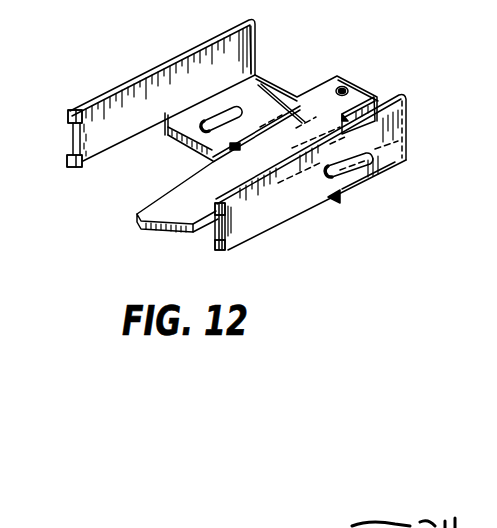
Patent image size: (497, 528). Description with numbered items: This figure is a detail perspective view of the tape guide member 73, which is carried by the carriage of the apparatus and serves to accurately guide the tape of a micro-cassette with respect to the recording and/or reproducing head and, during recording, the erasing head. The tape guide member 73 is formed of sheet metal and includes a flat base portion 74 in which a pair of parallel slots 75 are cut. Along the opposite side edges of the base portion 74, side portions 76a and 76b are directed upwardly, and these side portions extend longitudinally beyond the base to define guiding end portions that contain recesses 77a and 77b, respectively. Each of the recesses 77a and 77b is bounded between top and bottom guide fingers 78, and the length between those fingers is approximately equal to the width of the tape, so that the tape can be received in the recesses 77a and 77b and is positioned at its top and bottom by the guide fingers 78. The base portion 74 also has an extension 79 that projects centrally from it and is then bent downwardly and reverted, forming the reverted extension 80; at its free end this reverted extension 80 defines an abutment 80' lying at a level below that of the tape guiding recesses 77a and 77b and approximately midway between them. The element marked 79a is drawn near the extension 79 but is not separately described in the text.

The tape guide member 73 is at (290, 45).
The base portion 74 is at (273, 96).
The parallel slots 75 is at (178, 141).
The side portion 76a is at (205, 63).
The side portion 76b is at (392, 107).
The recess 77a is at (78, 133).
The recess 77b is at (218, 233).
The guide fingers 78 is at (70, 111).
The extension 79 is at (337, 75).
The tab 79a is at (439, 91).
The reverted extension 80 is at (188, 198).
The abutment 80' is at (145, 233).